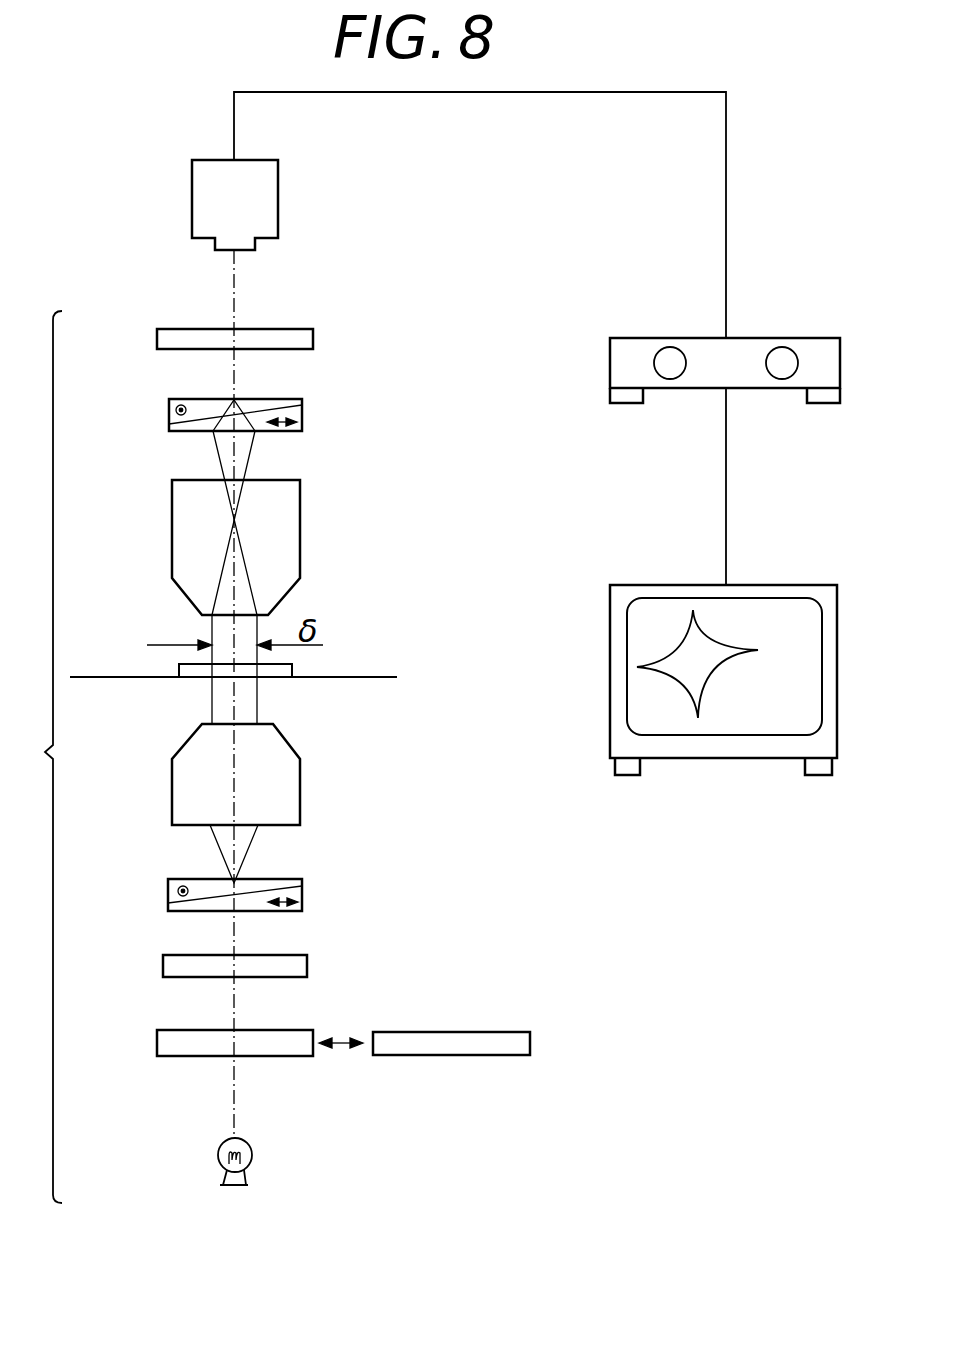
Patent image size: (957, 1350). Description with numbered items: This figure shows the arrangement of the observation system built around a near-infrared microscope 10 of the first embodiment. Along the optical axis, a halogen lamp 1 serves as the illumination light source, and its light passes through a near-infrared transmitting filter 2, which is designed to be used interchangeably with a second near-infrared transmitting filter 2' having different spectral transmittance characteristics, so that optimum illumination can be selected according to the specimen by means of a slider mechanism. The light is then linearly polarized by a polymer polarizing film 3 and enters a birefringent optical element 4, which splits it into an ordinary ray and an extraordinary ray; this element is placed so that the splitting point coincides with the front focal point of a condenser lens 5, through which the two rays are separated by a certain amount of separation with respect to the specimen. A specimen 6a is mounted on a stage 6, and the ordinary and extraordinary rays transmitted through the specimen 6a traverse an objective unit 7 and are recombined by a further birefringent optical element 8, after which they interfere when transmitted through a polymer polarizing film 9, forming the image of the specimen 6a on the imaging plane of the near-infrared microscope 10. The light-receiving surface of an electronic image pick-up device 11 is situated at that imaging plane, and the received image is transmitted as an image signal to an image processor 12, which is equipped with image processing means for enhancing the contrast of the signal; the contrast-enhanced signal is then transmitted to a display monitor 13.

The halogen lamp 1 is at (218, 1153).
The near-infrared transmitting filter 2 is at (215, 1045).
The near-infrared transmitting filter 2' is at (474, 1046).
The polymer polarizing film 3 is at (163, 967).
The birefringent optical element 4 is at (170, 893).
The condenser lens 5 is at (177, 792).
The stage 6 is at (90, 677).
The specimen 6a is at (293, 670).
The objective unit 7 is at (176, 541).
The birefringent optical element 8 is at (169, 414).
The polymer polarizing film 9 is at (157, 341).
The near-infrared microscope 10 is at (37, 757).
The electronic image pick-up device 11 is at (272, 197).
The image processor 12 is at (615, 363).
The display monitor 13 is at (610, 663).